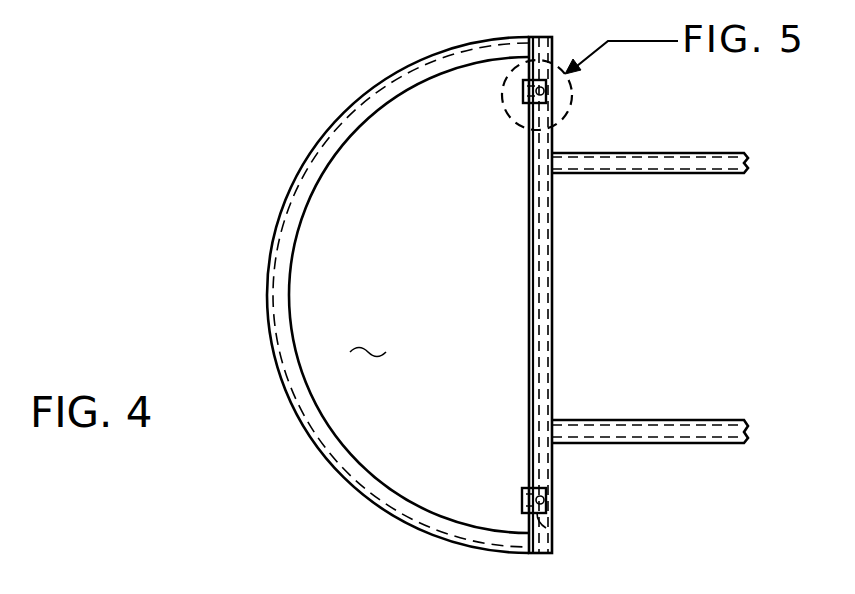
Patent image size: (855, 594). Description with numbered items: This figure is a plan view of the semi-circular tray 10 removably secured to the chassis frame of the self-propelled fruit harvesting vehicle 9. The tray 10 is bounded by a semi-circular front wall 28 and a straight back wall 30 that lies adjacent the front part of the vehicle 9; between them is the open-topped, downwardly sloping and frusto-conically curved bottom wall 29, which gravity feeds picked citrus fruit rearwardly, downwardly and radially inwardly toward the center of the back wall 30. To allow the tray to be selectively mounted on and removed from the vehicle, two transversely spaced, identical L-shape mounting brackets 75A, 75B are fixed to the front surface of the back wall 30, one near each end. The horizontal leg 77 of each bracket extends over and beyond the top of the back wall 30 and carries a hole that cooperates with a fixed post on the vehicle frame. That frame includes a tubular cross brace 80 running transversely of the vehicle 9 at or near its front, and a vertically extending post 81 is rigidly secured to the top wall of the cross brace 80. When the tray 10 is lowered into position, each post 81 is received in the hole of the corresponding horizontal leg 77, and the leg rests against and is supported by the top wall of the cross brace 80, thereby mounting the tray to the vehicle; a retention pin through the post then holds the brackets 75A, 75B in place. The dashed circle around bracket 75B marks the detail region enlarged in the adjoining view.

The semi-circular tray 10 is at (341, 208).
The semi-circular front wall 28 is at (282, 334).
The bottom wall 29 is at (370, 336).
The back wall 30 is at (529, 358).
The tubular cross brace 80 is at (553, 380).
The self-propelled vehicle 9 is at (675, 450).
The L-shape mounting bracket 75A is at (517, 490).
The L-shape mounting bracket 75B is at (522, 104).
The post 81 is at (553, 124).
The horizontal leg 77 is at (540, 514).